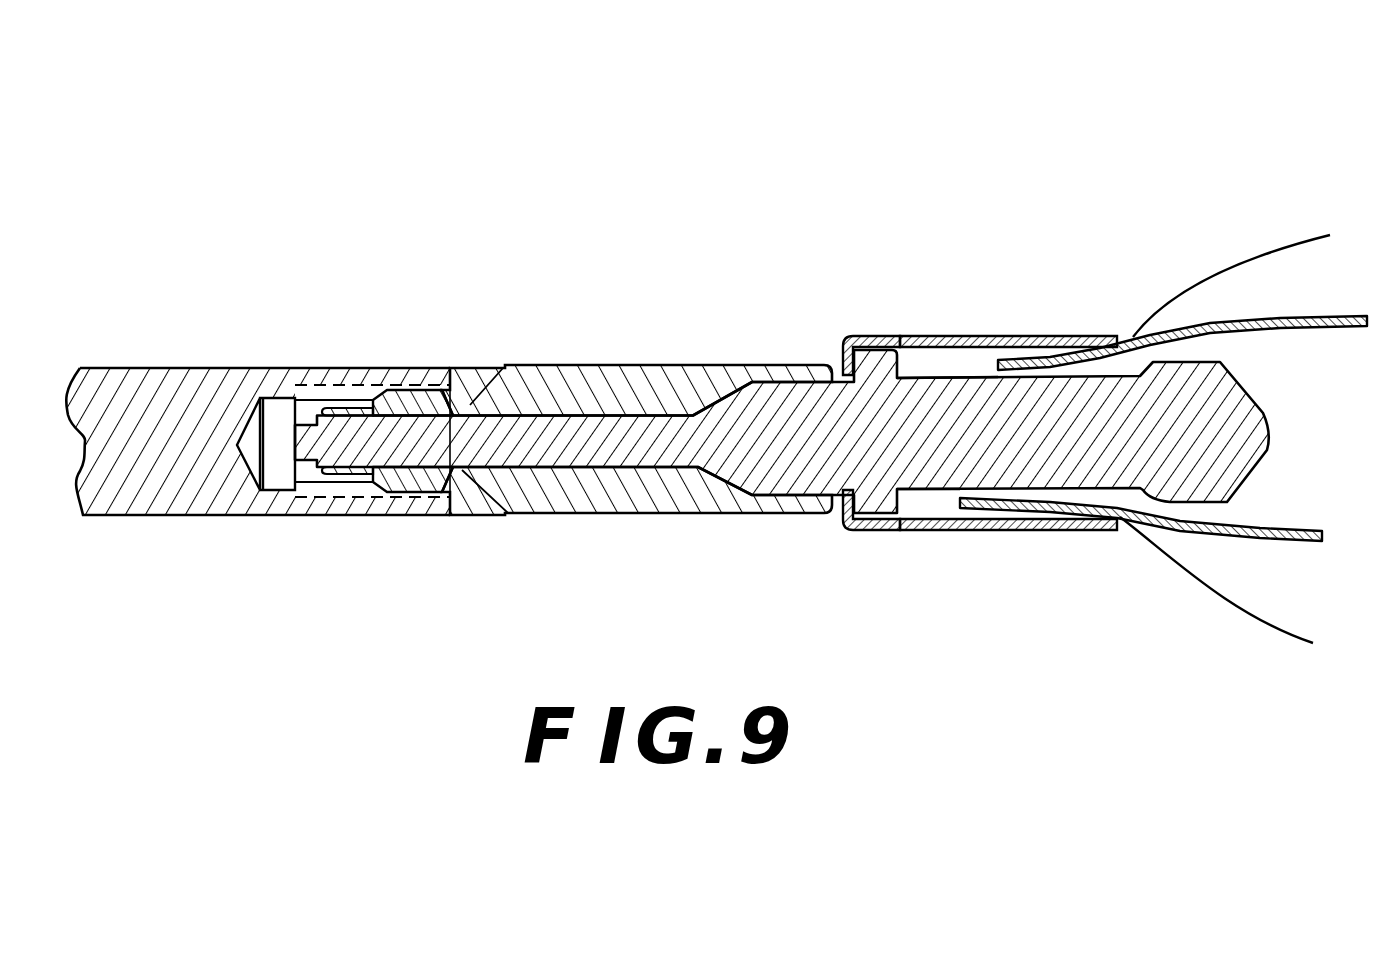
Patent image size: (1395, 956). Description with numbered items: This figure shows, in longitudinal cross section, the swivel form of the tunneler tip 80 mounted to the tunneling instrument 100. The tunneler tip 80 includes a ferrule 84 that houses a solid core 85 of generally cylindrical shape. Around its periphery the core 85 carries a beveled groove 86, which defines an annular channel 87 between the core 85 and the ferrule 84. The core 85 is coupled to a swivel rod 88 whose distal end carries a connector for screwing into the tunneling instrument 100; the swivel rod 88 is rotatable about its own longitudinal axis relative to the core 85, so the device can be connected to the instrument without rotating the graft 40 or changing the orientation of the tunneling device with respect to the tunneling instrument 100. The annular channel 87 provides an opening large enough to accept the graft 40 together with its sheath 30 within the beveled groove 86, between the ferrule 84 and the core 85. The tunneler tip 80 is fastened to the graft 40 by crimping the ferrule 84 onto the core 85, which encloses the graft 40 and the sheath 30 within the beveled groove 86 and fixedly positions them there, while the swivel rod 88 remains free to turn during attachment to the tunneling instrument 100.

The tunneler tip 80 is at (718, 353).
The sheath 30 is at (1260, 257).
The graft 40 is at (1317, 327).
The ferrule 84 is at (987, 334).
The solid core 85 is at (1270, 417).
The beveled groove 86 is at (917, 337).
The annular channel 87 is at (950, 362).
The swivel rod 88 is at (626, 366).
The tunneling instrument 100 is at (215, 368).